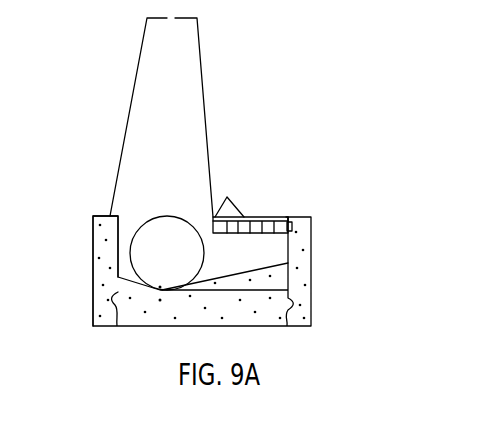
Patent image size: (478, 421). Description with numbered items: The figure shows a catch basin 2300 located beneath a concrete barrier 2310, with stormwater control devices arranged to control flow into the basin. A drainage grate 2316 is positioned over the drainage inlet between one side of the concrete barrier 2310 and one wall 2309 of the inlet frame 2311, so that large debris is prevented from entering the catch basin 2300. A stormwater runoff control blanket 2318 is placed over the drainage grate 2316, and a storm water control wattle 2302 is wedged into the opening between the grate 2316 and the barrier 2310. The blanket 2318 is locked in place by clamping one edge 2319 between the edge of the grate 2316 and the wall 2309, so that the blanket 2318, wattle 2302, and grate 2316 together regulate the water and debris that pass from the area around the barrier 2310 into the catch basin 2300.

The concrete barrier 2310 is at (192, 84).
The storm water control wattle 2302 is at (227, 197).
The drainage grate 2316 is at (255, 229).
The stormwater runoff control blanket 2318 is at (286, 214).
The edge 2319 is at (292, 225).
The catch basin 2300 is at (257, 267).
The wall 2309 is at (300, 282).
The inlet frame 2311 is at (93, 290).